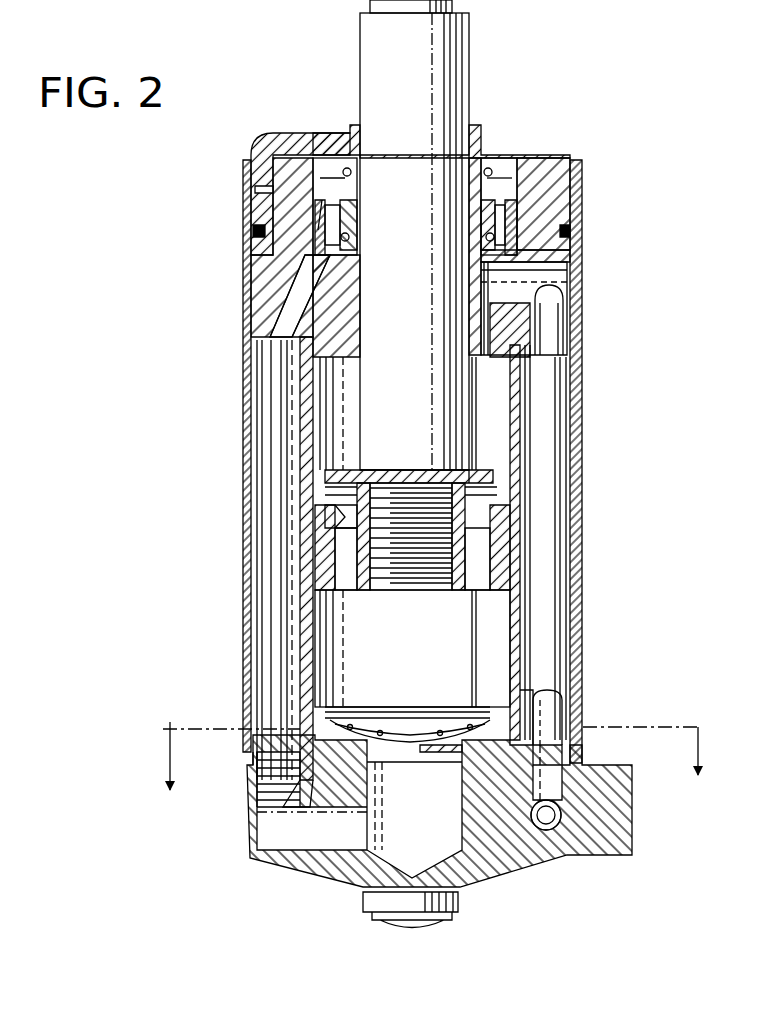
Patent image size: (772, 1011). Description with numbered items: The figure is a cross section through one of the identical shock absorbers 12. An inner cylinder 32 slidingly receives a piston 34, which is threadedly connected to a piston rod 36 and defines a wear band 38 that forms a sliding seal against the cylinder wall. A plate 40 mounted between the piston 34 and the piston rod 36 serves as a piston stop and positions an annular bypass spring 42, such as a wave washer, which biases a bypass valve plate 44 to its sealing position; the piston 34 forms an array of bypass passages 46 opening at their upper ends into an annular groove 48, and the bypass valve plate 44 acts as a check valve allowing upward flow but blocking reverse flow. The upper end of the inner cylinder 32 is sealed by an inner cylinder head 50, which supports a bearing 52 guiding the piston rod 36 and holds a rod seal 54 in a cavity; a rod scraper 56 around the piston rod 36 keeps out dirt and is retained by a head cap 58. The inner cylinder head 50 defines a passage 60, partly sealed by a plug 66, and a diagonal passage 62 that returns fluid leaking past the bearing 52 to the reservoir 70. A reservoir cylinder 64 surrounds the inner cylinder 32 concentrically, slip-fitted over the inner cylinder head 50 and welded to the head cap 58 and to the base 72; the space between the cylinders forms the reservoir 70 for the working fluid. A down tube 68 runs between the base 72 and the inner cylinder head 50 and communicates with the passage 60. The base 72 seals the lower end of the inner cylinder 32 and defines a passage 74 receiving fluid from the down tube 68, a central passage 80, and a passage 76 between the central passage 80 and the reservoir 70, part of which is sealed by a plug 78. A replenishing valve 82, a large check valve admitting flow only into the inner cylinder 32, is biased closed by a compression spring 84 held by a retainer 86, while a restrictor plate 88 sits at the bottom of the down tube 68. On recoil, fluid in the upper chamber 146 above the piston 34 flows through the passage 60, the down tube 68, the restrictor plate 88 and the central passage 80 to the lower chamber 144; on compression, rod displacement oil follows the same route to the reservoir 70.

The shock absorber 12 is at (215, 380).
The inner cylinder 32 is at (303, 412).
The piston 34 is at (370, 593).
The piston rod 36 is at (470, 50).
The wear band 38 is at (507, 548).
The plate 40 is at (490, 463).
The annular bypass spring 42 is at (497, 490).
The bypass valve plate 44 is at (493, 505).
The bypass passages 46 is at (315, 565).
The annular groove 48 is at (330, 524).
The inner cylinder head 50 is at (547, 211).
The bearing 52 is at (515, 337).
The rod seal 54 is at (485, 198).
The rod scraper 56 is at (477, 130).
The head cap 58 is at (322, 133).
The passage 60 is at (540, 268).
The diagonal passage 62 is at (313, 273).
The reservoir cylinder 64 is at (578, 395).
The plug 66 is at (565, 290).
The down tube 68 is at (555, 432).
The reservoir 70 is at (293, 462).
The base 72 is at (543, 868).
The passage 74 is at (560, 805).
The passage 76 is at (268, 750).
The plug 78 is at (255, 807).
The central passage 80 is at (435, 803).
The replenishing valve 82 is at (411, 747).
The compression spring 84 is at (458, 727).
The retainer 86 is at (485, 703).
The restrictor plate 88 is at (565, 725).
The lower chamber 144 is at (400, 648).
The upper chamber 146 is at (506, 412).